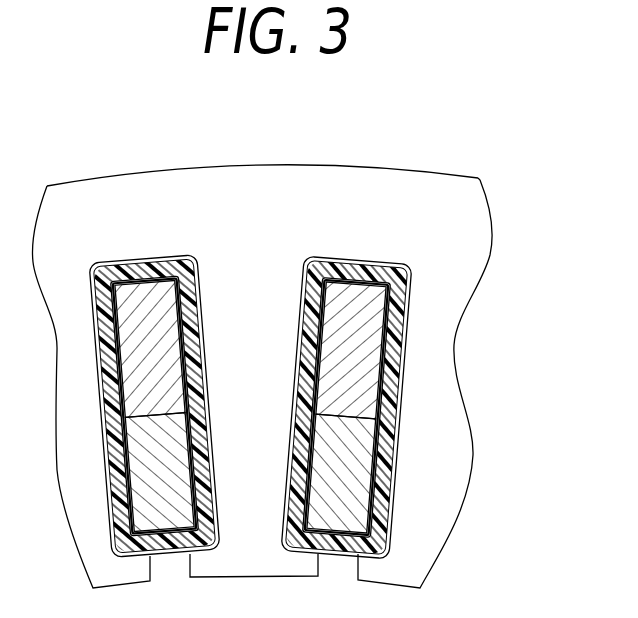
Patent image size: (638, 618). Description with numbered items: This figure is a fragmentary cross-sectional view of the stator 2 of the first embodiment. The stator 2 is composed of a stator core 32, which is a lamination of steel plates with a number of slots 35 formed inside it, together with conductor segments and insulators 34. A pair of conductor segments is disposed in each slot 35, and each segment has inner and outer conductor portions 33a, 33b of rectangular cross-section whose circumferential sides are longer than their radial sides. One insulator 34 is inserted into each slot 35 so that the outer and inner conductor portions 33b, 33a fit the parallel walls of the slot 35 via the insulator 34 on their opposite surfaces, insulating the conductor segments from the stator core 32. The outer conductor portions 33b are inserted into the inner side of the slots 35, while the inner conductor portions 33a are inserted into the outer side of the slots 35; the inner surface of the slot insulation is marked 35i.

The stator 2 is at (515, 202).
The stator core 32 is at (282, 187).
The inner conductor portion 33a is at (362, 483).
The outer conductor portion 33b is at (378, 293).
The insulator 34 is at (403, 335).
The slot 35 is at (133, 258).
The inner surface of slot insulator 35i is at (320, 374).